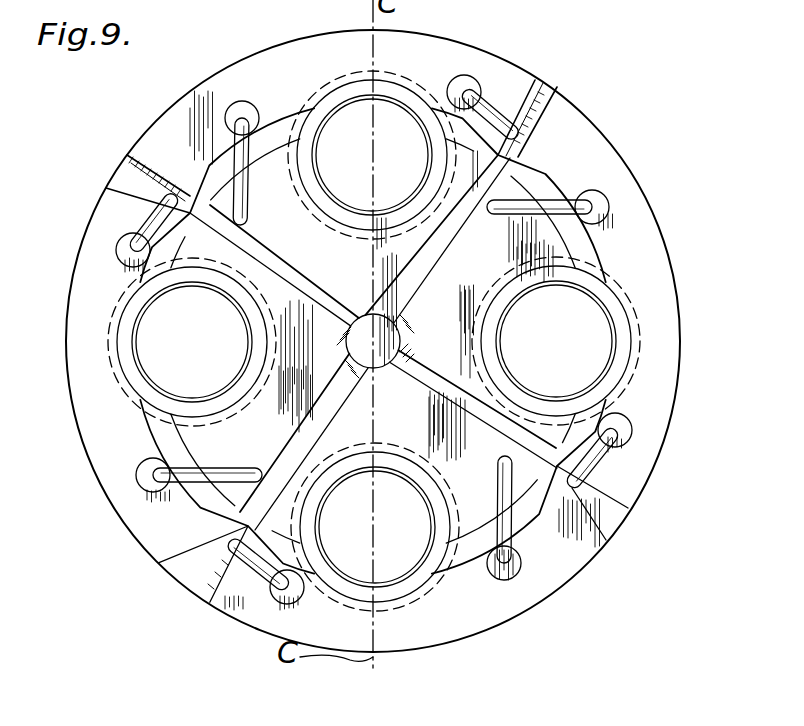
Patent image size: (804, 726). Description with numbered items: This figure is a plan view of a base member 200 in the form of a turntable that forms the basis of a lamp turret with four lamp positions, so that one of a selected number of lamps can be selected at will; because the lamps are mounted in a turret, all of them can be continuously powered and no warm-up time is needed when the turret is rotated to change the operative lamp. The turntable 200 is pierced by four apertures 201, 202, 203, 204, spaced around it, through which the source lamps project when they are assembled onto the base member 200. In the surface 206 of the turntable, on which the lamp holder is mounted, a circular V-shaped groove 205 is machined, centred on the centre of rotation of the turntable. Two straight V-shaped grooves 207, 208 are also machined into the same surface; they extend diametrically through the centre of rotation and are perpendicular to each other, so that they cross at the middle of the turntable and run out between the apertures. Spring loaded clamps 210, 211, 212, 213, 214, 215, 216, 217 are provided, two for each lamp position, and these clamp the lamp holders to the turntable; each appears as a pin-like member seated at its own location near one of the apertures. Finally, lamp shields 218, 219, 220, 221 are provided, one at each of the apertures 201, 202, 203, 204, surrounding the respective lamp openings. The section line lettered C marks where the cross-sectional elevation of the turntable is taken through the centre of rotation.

The base member 200 is at (630, 553).
The aperture 201 is at (353, 183).
The aperture 202 is at (600, 360).
The aperture 203 is at (425, 563).
The aperture 204 is at (160, 374).
The circular V-shaped groove 205 is at (586, 248).
The surface 206 is at (276, 66).
The straight V-shaped groove 207 is at (210, 586).
The straight V-shaped groove 208 is at (127, 157).
The spring loaded clamp 210 is at (240, 150).
The spring loaded clamp 211 is at (486, 114).
The spring loaded clamp 212 is at (556, 204).
The spring loaded clamp 213 is at (590, 470).
The spring loaded clamp 214 is at (505, 540).
The spring loaded clamp 215 is at (248, 606).
The spring loaded clamp 216 is at (197, 493).
The spring loaded clamp 217 is at (150, 222).
The lamp shield 218 is at (394, 90).
The lamp shield 219 is at (617, 320).
The lamp shield 220 is at (447, 570).
The lamp shield 221 is at (130, 378).